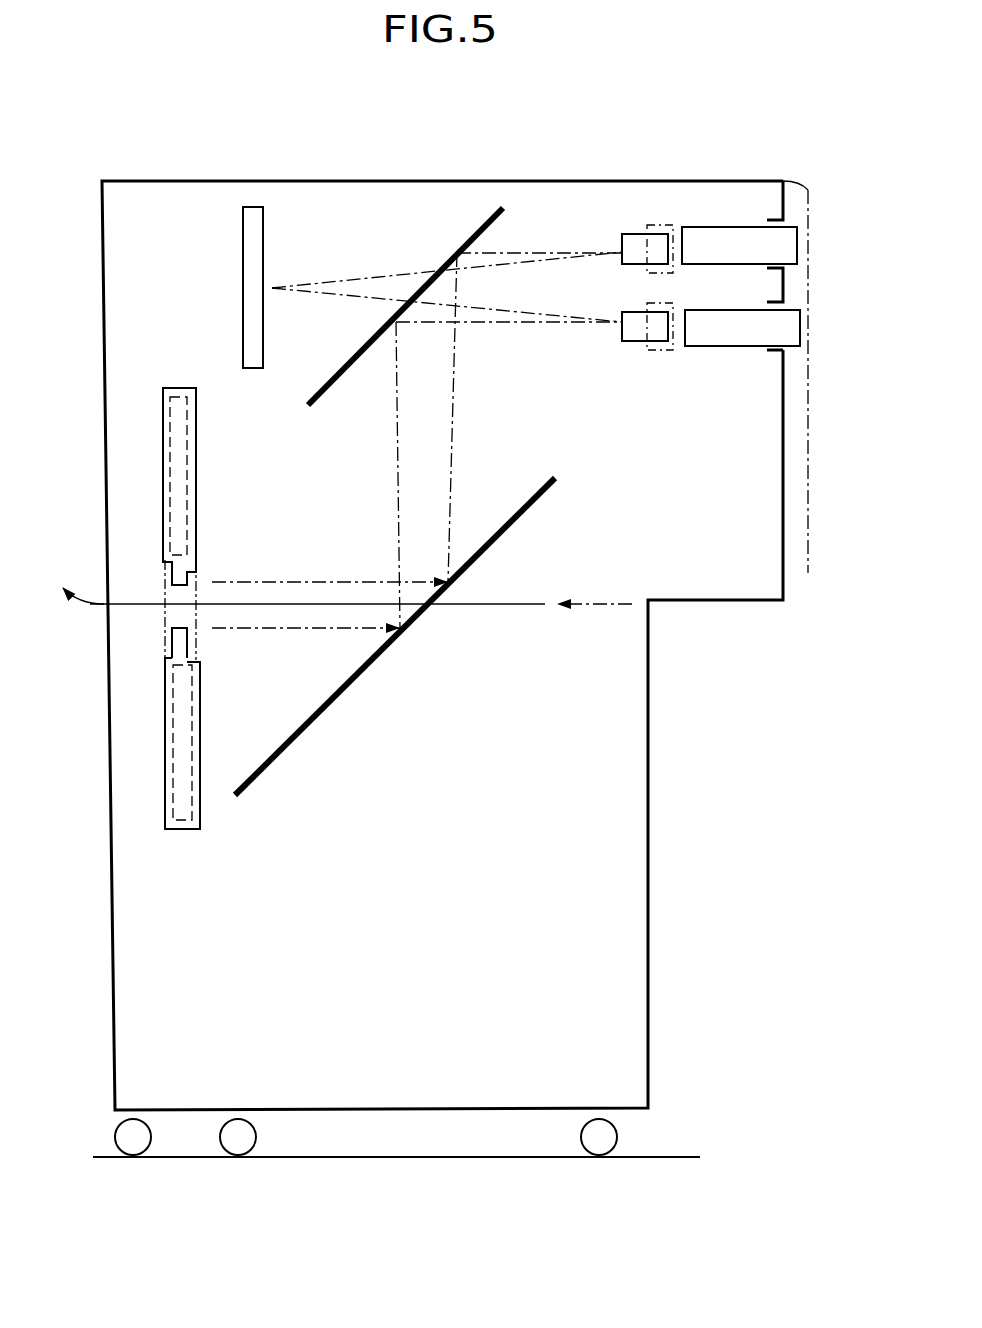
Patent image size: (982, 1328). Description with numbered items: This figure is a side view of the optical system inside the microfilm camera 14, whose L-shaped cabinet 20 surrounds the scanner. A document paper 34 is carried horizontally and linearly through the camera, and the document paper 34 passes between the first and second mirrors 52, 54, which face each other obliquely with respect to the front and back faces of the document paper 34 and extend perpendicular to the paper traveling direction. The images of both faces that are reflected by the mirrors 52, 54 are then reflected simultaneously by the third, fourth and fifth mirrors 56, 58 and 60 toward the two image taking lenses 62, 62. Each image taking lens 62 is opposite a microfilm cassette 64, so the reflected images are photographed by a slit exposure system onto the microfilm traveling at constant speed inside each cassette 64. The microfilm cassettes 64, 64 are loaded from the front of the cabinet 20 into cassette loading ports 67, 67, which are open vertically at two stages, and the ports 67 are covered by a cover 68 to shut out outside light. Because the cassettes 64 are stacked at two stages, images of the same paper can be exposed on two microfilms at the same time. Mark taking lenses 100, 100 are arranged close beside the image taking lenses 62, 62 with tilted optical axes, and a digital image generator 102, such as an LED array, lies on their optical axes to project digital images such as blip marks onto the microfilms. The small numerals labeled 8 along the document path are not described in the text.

The document sheet 8 is at (210, 608).
The microfilm camera 14 is at (463, 669).
The cabinet 20 is at (648, 770).
The document paper 34 is at (497, 614).
The first mirror 52 is at (173, 567).
The second mirror 54 is at (173, 643).
The third mirror 56 is at (165, 762).
The fourth mirror 58 is at (340, 695).
The fifth mirror 60 is at (320, 392).
The image taking lens 62 is at (628, 234).
The microfilm cassette 64 is at (736, 227).
The cassette loading port 67 is at (788, 226).
The cover 68 is at (810, 573).
The mark taking lens 100 is at (658, 225).
The digital image generator 102 is at (243, 290).